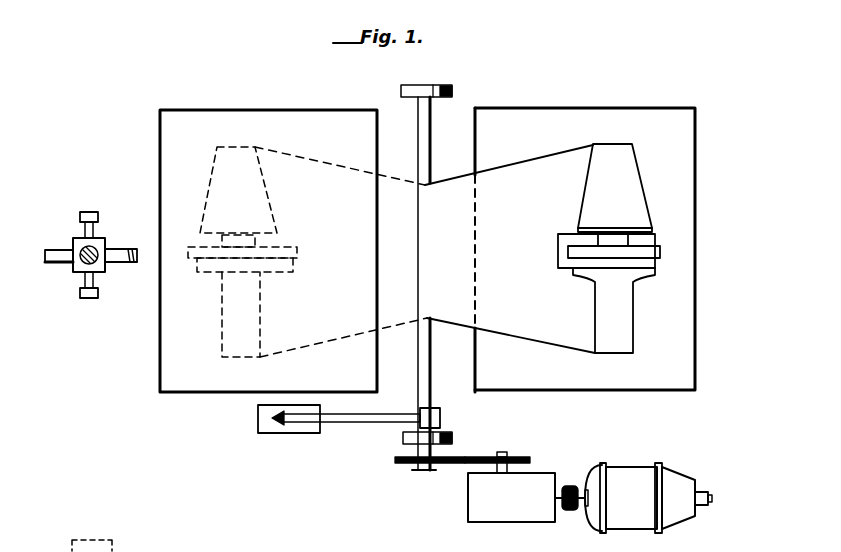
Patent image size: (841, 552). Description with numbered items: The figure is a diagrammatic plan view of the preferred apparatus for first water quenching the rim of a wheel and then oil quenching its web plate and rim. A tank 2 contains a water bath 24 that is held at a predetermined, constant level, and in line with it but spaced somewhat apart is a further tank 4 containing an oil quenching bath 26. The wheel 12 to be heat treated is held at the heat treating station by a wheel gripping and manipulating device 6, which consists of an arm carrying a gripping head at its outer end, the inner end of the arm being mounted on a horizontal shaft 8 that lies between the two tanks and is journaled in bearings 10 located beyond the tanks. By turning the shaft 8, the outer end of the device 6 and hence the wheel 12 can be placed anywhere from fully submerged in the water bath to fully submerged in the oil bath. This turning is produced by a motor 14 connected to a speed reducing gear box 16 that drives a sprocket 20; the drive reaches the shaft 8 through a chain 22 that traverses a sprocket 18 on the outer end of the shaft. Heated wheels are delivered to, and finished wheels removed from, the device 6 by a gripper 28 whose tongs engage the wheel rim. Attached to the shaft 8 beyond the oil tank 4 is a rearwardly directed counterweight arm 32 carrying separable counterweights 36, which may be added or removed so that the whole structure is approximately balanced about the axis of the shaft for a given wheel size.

The tank 2 is at (697, 351).
The tank 4 is at (160, 383).
The wheel gripping and manipulating device 6 is at (460, 170).
The horizontal shaft 8 is at (408, 130).
The bearings 10 is at (446, 88).
The wheel 12 is at (660, 250).
The motor 14 is at (640, 473).
The speed reducing gear box 16 is at (530, 512).
The sprocket 18 is at (405, 464).
The sprocket 20 is at (520, 455).
The chain 22 is at (468, 463).
The water bath 24 is at (574, 133).
The oil quenching bath 26 is at (192, 133).
The gripper 28 is at (98, 290).
The counterweight arm 32 is at (355, 418).
The separable counterweights 36 is at (258, 430).